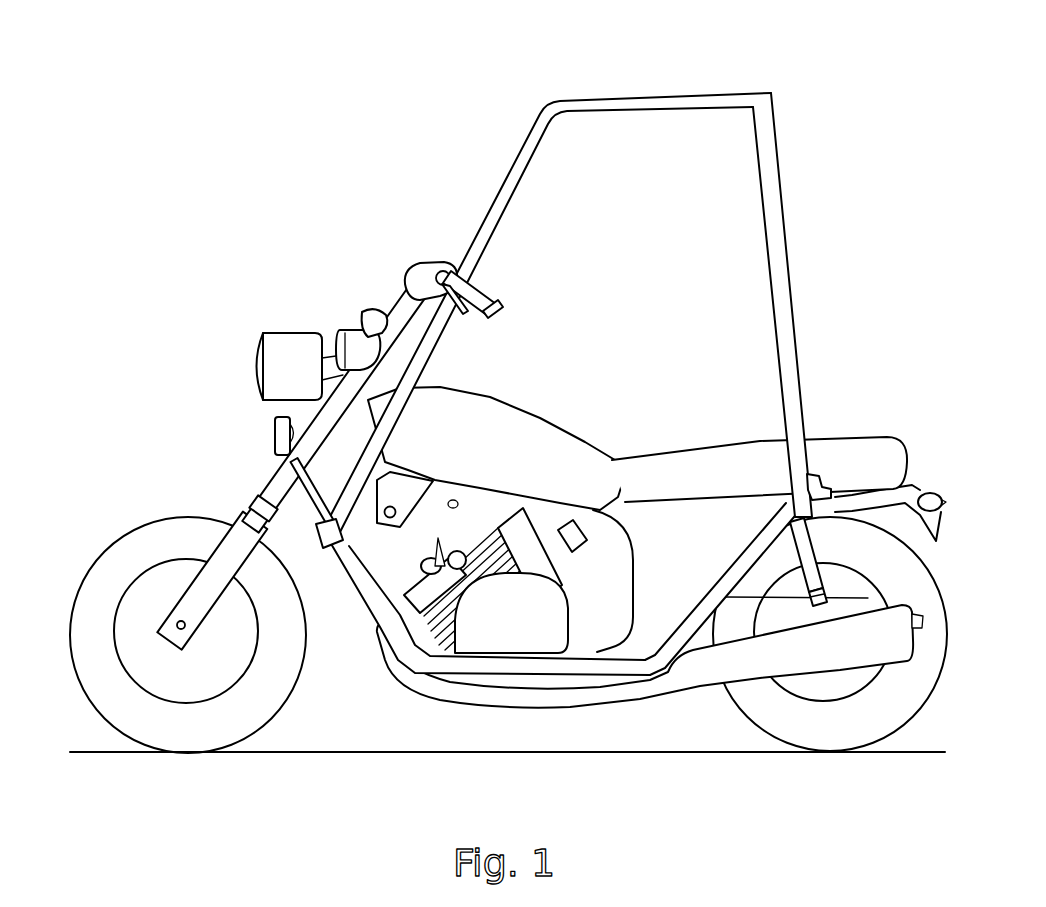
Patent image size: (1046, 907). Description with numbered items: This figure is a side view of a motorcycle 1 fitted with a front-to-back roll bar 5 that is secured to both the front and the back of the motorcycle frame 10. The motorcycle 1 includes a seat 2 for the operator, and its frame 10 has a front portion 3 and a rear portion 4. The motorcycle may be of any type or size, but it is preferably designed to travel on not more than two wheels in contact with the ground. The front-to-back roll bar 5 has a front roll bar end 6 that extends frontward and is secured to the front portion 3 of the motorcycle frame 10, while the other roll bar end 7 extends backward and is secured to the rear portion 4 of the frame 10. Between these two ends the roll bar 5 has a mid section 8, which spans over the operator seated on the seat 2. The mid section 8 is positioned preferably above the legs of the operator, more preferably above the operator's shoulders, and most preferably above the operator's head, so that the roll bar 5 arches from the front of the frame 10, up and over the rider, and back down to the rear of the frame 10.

The motorcycle 1 is at (482, 451).
The seat 2 is at (740, 487).
The front portion 3 is at (323, 480).
The rear portion 4 is at (722, 589).
The front-to-back roll bar 5 is at (808, 305).
The front roll bar end 6 is at (257, 500).
The other roll bar end 7 is at (873, 438).
The mid section 8 is at (546, 275).
The motorcycle frame 10 is at (483, 608).